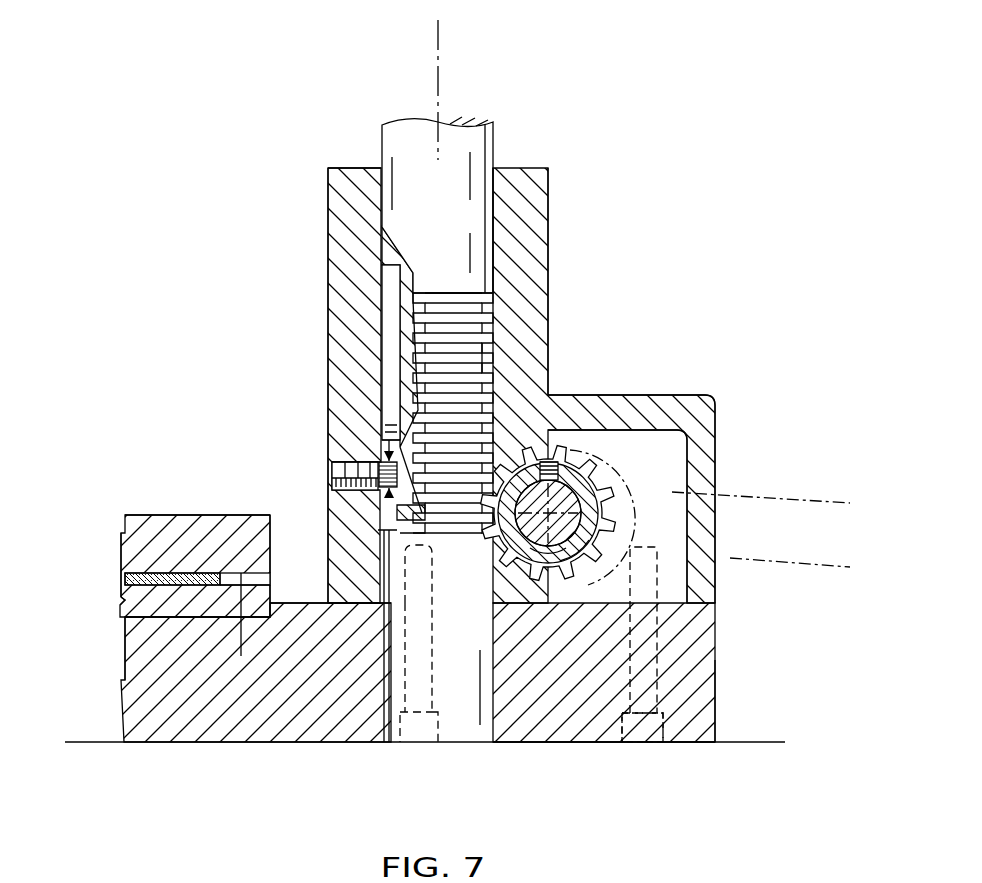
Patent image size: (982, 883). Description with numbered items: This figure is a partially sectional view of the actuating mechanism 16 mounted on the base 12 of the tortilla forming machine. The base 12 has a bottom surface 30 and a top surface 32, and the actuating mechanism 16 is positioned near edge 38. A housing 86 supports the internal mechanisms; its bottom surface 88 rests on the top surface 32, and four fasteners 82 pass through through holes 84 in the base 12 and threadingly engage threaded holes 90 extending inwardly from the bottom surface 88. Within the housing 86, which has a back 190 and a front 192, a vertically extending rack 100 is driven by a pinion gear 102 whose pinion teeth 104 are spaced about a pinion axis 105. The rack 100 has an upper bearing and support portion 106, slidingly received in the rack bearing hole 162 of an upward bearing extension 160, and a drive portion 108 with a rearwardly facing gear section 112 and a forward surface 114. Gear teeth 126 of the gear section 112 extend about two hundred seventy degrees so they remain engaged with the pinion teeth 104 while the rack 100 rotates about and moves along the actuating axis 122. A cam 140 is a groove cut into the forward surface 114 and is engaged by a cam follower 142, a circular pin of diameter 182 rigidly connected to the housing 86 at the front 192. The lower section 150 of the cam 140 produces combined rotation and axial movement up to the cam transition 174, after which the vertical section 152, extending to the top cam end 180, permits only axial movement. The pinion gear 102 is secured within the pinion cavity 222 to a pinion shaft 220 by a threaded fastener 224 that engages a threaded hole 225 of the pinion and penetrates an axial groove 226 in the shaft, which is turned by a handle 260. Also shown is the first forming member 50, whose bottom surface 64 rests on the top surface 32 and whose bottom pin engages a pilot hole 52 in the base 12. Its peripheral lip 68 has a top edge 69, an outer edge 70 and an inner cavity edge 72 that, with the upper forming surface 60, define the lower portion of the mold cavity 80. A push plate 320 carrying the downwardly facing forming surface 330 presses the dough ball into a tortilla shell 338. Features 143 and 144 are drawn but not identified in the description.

The base 12 is at (718, 675).
The actuating mechanism 16 is at (655, 350).
The bottom surface 30 is at (576, 745).
The top surface 32 is at (298, 603).
The edge 38 is at (718, 700).
The first forming member 50 is at (118, 602).
The pilot hole 52 is at (273, 617).
The first forming surface 60 is at (217, 583).
The bottom surface 64 is at (183, 620).
The peripheral lip 68 is at (244, 631).
The top edge 69 is at (242, 515).
The outer edge 70 is at (272, 588).
The inner cavity edge 72 is at (218, 580).
The mold cavity 80 is at (150, 575).
The fasteners 82 is at (388, 745).
The through holes 84 is at (628, 690).
The housing 86 is at (670, 392).
The bottom surface 88 is at (344, 643).
The threaded holes 90 is at (408, 585).
The rack 100 is at (487, 205).
The pinion gear 102 is at (590, 463).
The pinion teeth 104 is at (617, 519).
The pinion axis 105 is at (567, 557).
The upper bearing and support portion 106 is at (488, 272).
The drive portion 108 is at (490, 330).
The gear section 112 is at (490, 357).
The forward surface 114 is at (366, 295).
The actuating axis 122 is at (452, 70).
The gear teeth 126 is at (490, 302).
The cam 140 is at (380, 303).
The cam follower 142 is at (380, 462).
The lower wedge 143 is at (408, 497).
The spring element 144 is at (340, 474).
The lower section 150 is at (386, 448).
The vertical section 152 is at (392, 327).
The upward bearing extension 160 is at (343, 185).
The rack bearing hole 162 is at (488, 250).
The cam transition 174 is at (390, 423).
The top cam end 180 is at (382, 256).
The diameter 182 is at (373, 495).
The back 190 is at (658, 446).
The front 192 is at (345, 462).
The pinion shaft 220 is at (531, 550).
The pinion cavity 222 is at (668, 393).
The threaded fastener 224 is at (555, 462).
The threaded hole 225 is at (549, 462).
The axial groove 226 is at (572, 492).
The handle 260 is at (808, 512).
The push plate 320 is at (172, 513).
The second forming surface 330 is at (160, 590).
The tortilla shell 338 is at (127, 572).